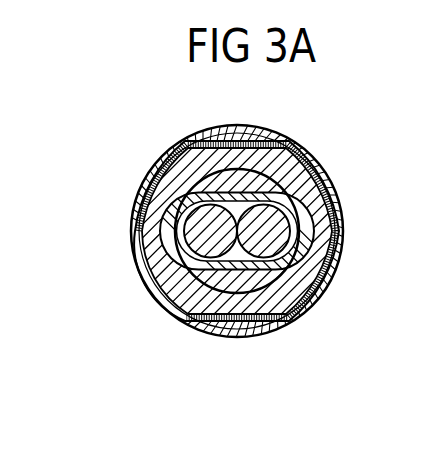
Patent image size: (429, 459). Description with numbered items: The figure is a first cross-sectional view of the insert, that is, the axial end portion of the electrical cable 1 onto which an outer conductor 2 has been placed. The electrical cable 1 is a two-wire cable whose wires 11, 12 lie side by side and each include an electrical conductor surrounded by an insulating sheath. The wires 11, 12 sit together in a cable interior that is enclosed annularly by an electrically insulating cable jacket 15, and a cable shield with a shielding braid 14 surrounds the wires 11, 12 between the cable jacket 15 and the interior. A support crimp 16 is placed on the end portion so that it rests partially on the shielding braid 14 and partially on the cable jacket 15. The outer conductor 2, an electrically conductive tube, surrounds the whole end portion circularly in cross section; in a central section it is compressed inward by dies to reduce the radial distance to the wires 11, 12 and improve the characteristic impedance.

The electrical cable 1 is at (298, 114).
The outer conductor 2 is at (258, 335).
The wire 11 is at (196, 233).
The wire 12 is at (277, 235).
The shielding braid 14 is at (300, 178).
The cable jacket 15 is at (222, 187).
The support crimp 16 is at (183, 175).